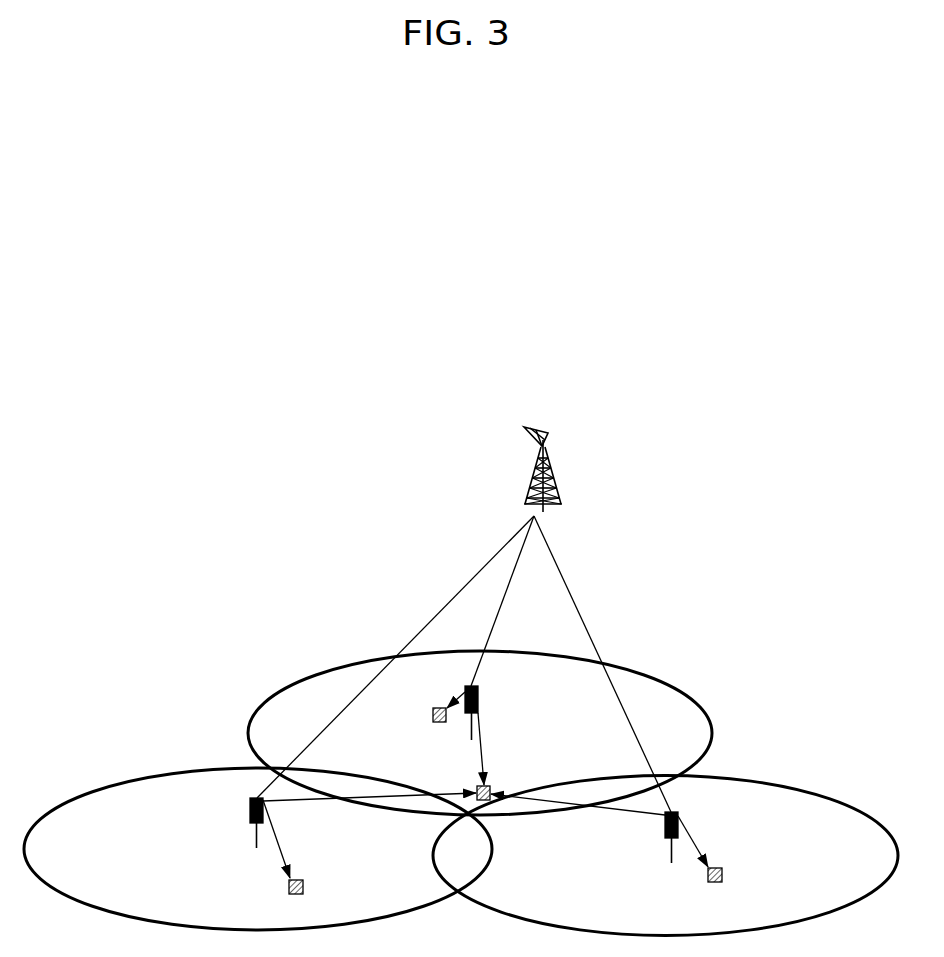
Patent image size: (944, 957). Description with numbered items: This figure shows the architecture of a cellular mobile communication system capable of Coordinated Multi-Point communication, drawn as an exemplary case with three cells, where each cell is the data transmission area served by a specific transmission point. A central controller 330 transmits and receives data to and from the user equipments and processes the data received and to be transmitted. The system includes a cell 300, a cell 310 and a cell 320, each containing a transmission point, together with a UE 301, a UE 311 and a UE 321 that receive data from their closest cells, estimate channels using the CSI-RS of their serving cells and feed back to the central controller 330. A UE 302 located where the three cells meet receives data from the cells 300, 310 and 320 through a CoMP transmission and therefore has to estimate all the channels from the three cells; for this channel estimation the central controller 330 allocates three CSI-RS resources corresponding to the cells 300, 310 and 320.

The cell 300 is at (318, 674).
The UE 301 is at (433, 709).
The UE 302 is at (490, 787).
The cell 310 is at (115, 784).
The UE 311 is at (303, 880).
The cell 320 is at (822, 796).
The UE 321 is at (723, 869).
The central controller 330 is at (551, 475).